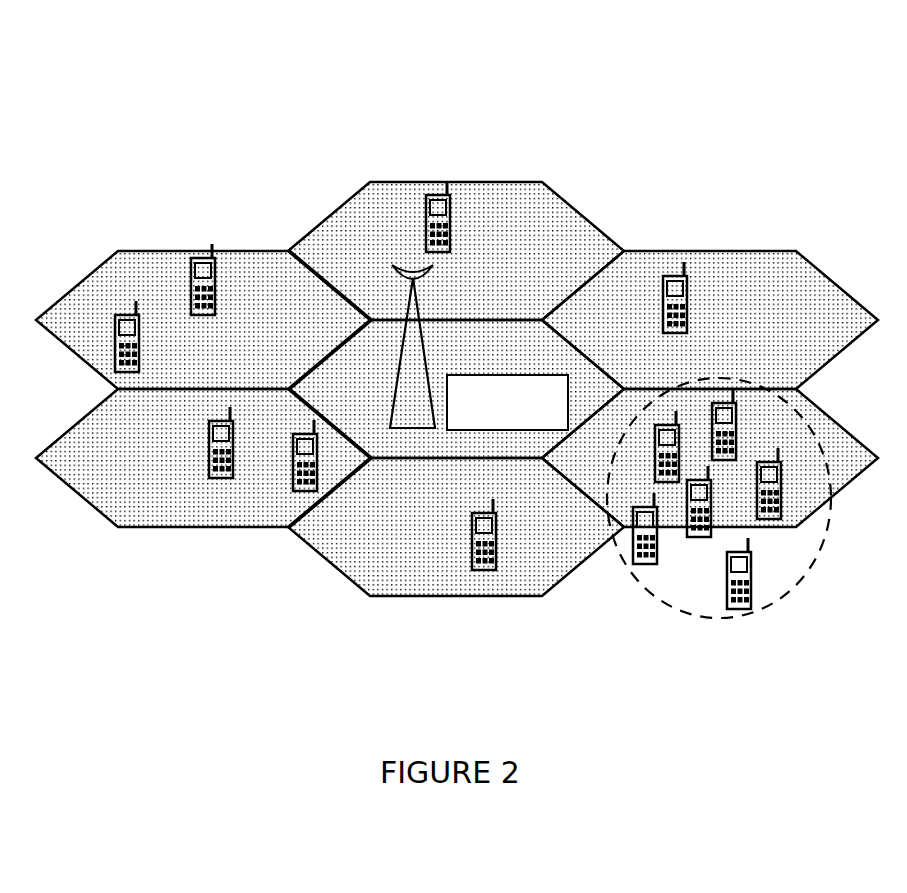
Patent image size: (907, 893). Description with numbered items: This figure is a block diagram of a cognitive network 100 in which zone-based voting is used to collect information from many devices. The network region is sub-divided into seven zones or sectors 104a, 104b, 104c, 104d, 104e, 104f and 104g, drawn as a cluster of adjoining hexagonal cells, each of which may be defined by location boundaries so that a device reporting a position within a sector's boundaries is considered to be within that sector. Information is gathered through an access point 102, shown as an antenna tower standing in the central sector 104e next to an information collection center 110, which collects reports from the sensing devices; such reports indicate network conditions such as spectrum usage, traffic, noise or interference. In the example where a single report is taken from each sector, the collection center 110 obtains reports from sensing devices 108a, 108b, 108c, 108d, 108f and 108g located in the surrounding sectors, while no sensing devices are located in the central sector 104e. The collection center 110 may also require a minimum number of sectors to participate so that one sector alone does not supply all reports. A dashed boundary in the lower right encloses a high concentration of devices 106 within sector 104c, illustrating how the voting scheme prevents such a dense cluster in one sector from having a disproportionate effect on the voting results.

The network 100 is at (632, 119).
The access point 102 is at (423, 350).
The sector 104a is at (475, 183).
The sector 104b is at (810, 262).
The sector 104c is at (842, 425).
The sector 104d is at (328, 568).
The sector 104e is at (378, 405).
The sector 104f is at (157, 528).
The sector 104g is at (148, 250).
The devices 106 is at (672, 605).
The sensing device 108a is at (452, 218).
The sensing device 108b is at (690, 300).
The sensing device 108c is at (780, 500).
The sensing device 108d is at (470, 537).
The sensing device 108f is at (208, 443).
The sensing device 108g is at (215, 272).
The information collection center 110 is at (505, 375).